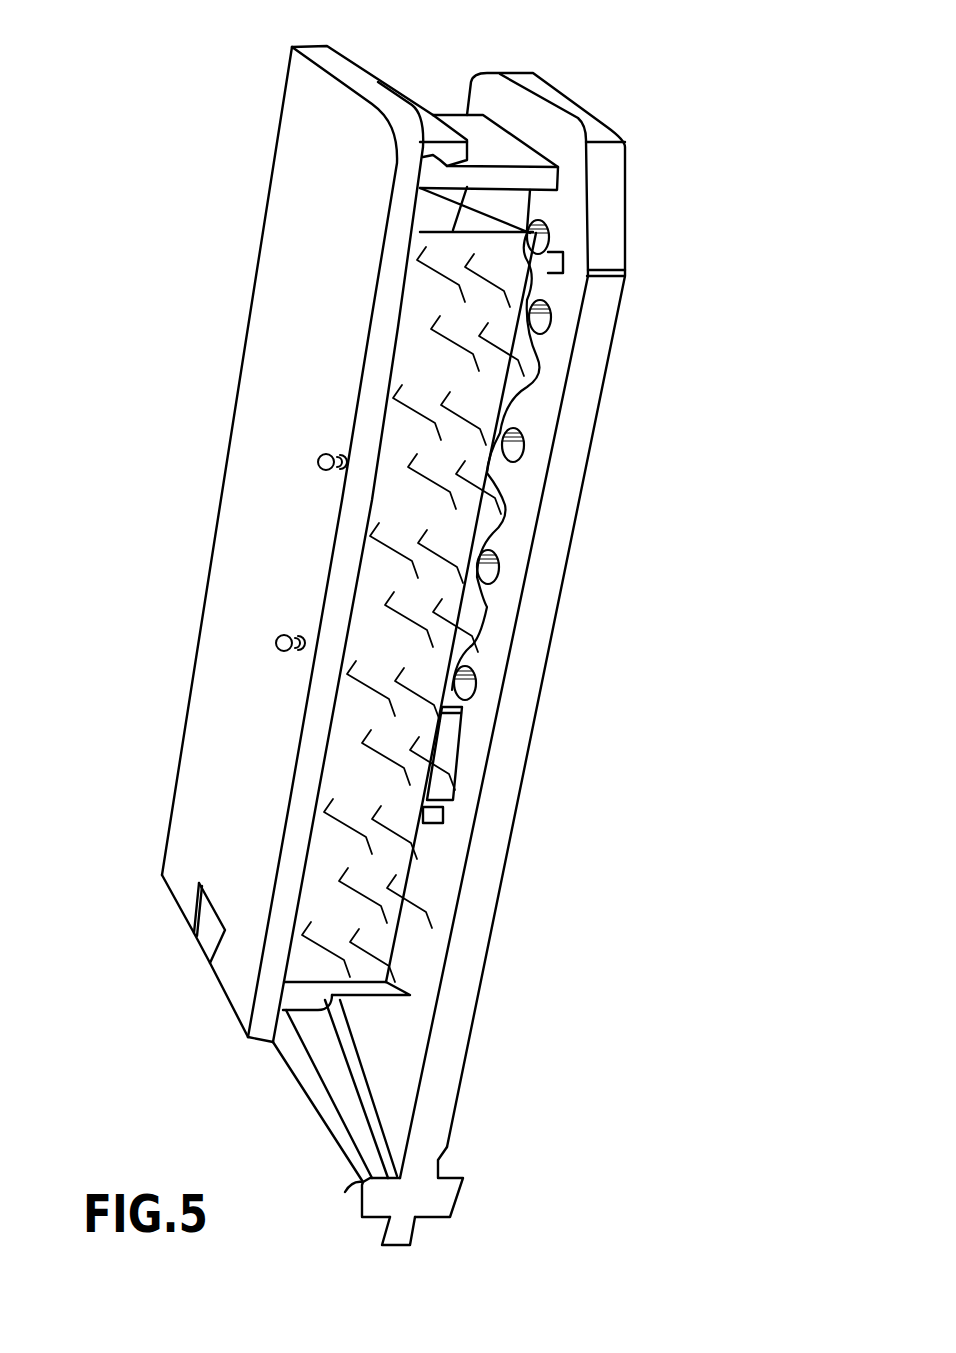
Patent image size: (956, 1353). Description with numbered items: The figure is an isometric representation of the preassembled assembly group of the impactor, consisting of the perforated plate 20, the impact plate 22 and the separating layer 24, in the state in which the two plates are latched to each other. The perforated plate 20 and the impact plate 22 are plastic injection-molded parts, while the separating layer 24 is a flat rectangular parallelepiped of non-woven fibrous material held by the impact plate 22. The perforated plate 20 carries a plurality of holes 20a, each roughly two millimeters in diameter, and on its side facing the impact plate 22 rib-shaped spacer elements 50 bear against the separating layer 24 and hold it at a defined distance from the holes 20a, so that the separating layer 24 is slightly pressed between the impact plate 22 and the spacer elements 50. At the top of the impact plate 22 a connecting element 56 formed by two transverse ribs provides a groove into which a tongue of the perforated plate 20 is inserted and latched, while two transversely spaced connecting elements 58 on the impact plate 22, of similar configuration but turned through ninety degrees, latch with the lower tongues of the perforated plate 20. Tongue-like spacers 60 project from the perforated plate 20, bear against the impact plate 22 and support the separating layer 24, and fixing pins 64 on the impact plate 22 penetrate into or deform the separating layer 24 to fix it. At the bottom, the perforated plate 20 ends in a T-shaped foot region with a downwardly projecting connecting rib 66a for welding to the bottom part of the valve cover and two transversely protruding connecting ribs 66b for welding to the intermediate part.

The perforated plate 20 is at (558, 677).
The holes 20a is at (543, 322).
The first impact plate 22 is at (178, 700).
The separating layer 24 is at (395, 934).
The spacer elements 50 is at (444, 754).
The connecting element 56 is at (435, 97).
The connecting elements 58 is at (349, 1012).
The spacers 60 is at (193, 930).
The fixing pins 64 is at (325, 452).
The connecting rib 66a is at (400, 1247).
The connecting ribs 66b is at (346, 1191).